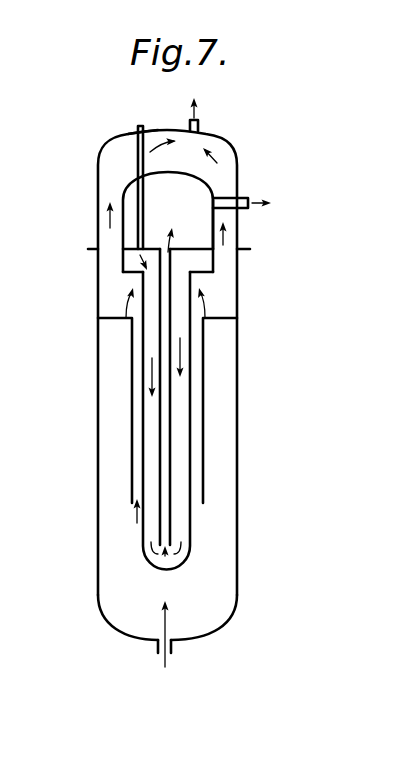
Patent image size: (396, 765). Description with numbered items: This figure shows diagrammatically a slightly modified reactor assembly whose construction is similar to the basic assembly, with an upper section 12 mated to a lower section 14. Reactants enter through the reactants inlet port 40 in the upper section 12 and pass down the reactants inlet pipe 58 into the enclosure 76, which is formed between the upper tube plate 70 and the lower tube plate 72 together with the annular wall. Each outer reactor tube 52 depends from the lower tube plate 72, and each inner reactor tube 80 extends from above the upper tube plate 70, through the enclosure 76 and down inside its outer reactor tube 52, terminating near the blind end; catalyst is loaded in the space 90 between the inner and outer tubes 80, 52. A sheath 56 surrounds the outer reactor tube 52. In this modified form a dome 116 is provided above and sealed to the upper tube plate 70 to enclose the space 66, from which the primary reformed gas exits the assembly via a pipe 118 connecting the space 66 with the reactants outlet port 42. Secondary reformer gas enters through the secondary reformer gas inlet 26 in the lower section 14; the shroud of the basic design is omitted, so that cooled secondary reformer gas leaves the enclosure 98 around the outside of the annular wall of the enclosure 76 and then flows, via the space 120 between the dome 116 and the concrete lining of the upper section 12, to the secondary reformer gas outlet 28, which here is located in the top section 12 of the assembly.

The lower section 14 is at (85, 537).
The upper section 12 is at (84, 234).
The reactants inlet port 40 is at (143, 129).
The reactants inlet pipe 58 is at (138, 148).
The secondary reformer gas outlet 28 is at (198, 124).
The dome 116 is at (124, 190).
The pipe 118 is at (218, 196).
The space 120 is at (187, 160).
The reactants outlet port 42 is at (250, 204).
The space 66 is at (190, 225).
The upper tube plate 70 is at (194, 249).
The enclosure 76 is at (130, 263).
The lower tube plate 72 is at (132, 275).
The enclosure 98 is at (204, 284).
The outer reactor tube 52 is at (190, 530).
The inner reactor tube 80 is at (172, 393).
The space 90 is at (152, 342).
The sheath 56 is at (132, 405).
The secondary reformer gas inlet 26 is at (172, 650).